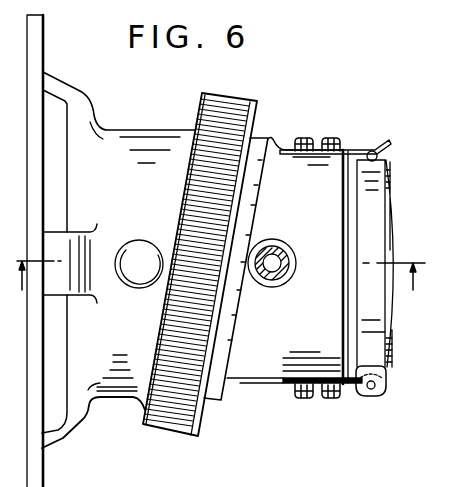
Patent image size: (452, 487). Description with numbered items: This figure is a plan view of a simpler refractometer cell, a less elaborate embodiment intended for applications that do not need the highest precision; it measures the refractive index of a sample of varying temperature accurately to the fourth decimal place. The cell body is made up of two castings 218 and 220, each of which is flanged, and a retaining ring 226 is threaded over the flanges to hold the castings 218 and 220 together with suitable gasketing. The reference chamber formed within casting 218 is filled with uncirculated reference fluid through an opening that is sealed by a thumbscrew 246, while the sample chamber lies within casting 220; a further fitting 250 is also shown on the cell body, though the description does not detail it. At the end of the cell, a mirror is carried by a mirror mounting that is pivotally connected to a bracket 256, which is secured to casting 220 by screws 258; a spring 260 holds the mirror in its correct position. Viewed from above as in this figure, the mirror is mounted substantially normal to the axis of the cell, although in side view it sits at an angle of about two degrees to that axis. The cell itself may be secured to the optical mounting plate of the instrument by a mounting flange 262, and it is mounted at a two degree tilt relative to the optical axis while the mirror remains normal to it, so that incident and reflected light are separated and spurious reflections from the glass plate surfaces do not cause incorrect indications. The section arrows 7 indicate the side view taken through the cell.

The casting 218 is at (128, 372).
The casting 220 is at (262, 365).
The retaining ring 226 is at (242, 98).
The thumbscrew 246 is at (138, 247).
The shaft 250 is at (279, 278).
The bracket 256 is at (352, 388).
The screws 258 is at (318, 395).
The spring 260 is at (358, 148).
The mounting flange 262 is at (58, 432).
The section line 7- 7 is at (220, 289).